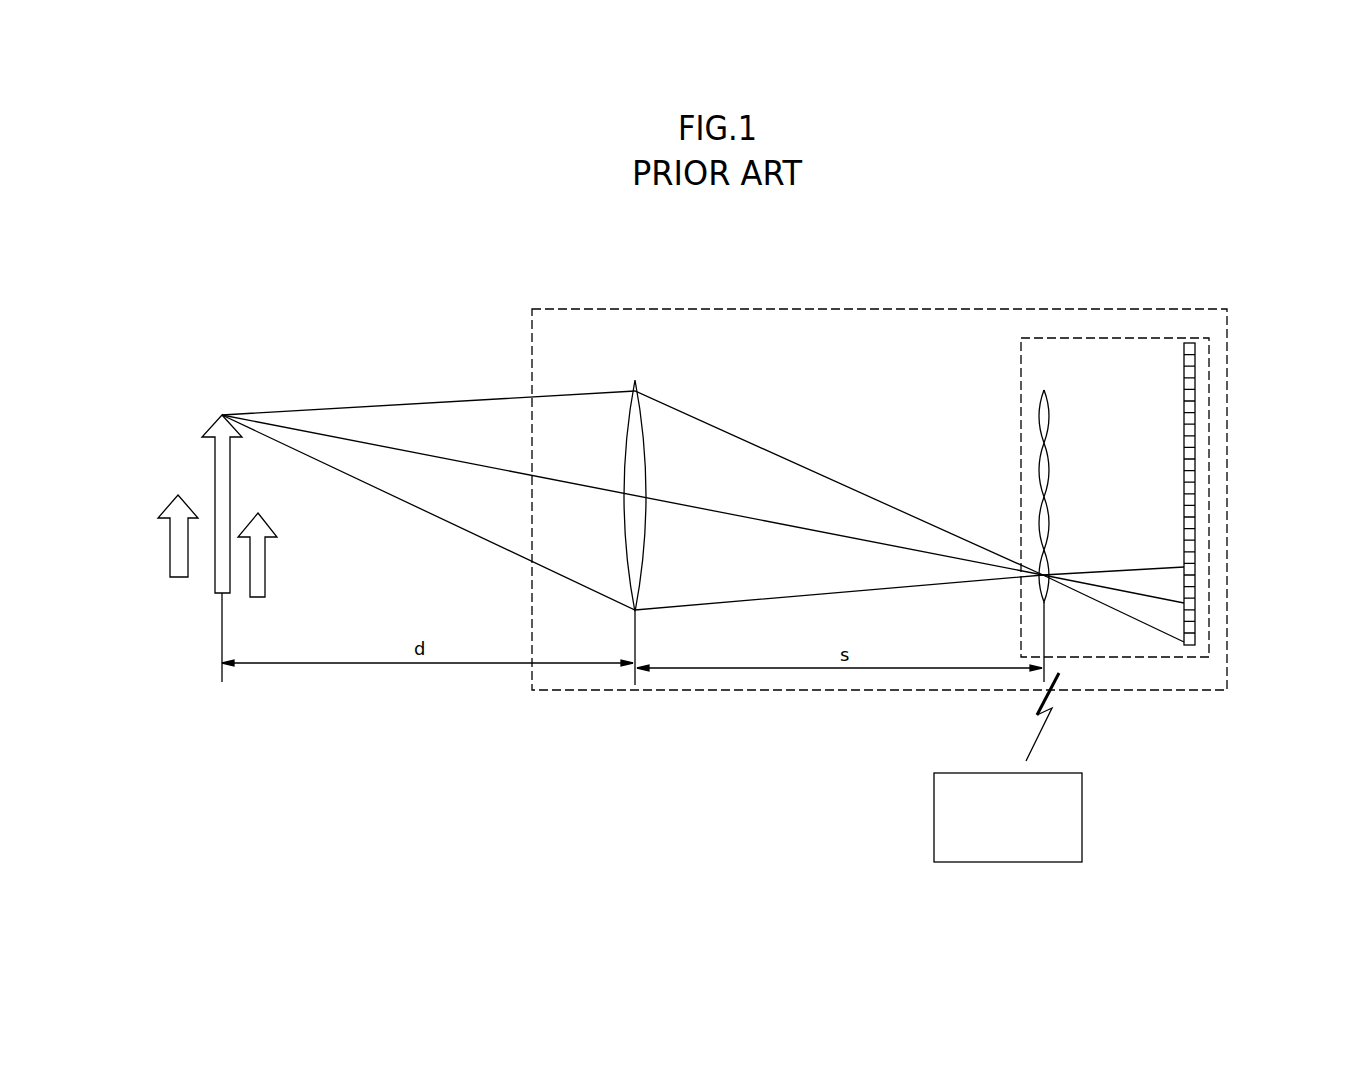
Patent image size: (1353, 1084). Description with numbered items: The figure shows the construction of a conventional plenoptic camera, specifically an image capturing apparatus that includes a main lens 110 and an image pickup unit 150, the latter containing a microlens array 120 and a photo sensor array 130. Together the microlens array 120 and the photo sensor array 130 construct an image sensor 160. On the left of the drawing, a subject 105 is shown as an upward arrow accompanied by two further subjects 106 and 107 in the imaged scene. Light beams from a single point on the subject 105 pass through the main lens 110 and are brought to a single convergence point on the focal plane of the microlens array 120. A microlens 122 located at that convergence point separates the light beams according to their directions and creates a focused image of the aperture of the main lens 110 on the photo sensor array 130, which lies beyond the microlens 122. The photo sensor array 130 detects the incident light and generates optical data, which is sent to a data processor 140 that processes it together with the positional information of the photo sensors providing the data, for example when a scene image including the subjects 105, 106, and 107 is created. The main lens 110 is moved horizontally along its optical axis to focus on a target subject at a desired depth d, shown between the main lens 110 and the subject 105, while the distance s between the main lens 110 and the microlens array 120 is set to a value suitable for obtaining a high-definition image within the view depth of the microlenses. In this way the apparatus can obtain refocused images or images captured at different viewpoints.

The subject 105 is at (225, 402).
The subject 106 is at (174, 488).
The subject 107 is at (263, 507).
The main lens 110 is at (648, 362).
The microlens array 120 is at (1101, 496).
The microlens 122 is at (1047, 560).
The photo sensor array 130 is at (1183, 443).
The data processor 140 is at (1082, 862).
The image pickup unit 150 is at (1113, 308).
The image sensor 160 is at (1210, 367).